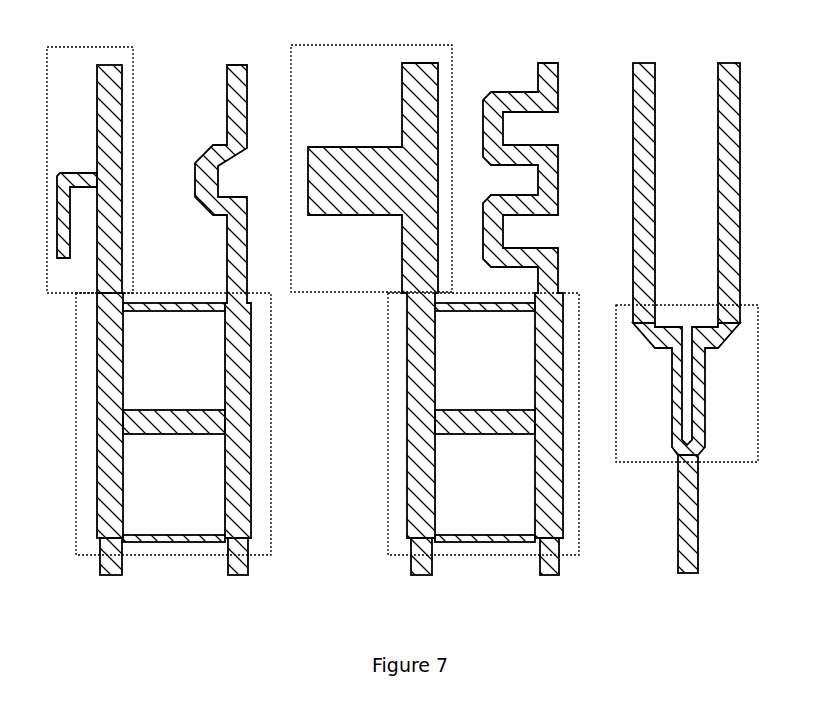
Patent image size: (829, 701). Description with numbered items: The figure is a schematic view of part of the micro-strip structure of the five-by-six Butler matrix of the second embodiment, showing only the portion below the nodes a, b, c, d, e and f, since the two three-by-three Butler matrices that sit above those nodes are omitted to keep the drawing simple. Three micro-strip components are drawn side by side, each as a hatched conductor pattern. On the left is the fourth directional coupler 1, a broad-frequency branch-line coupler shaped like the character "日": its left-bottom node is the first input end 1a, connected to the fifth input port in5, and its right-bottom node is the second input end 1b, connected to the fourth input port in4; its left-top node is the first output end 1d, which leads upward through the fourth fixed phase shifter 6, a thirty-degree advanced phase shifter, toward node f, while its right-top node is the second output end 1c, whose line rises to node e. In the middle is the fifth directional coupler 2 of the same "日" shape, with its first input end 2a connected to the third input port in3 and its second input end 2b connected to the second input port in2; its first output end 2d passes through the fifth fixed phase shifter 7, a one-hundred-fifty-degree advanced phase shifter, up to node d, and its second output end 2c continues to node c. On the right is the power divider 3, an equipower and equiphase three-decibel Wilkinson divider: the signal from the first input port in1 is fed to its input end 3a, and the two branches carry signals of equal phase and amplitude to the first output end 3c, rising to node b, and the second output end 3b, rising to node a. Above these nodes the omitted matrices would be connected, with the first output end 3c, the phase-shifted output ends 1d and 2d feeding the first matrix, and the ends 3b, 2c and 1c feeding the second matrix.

The fourth directional coupler 1 is at (76, 420).
The first input end of the fourth directional coupler 1a is at (141, 521).
The second input end of the fourth directional coupler 1b is at (209, 521).
The second output end of the fourth directional coupler 1c is at (208, 330).
The first output end of the fourth directional coupler 1d is at (141, 330).
The fifth directional coupler 2 is at (388, 397).
The first input end of the fifth directional coupler 2a is at (453, 521).
The second input end of the fifth directional coupler 2b is at (519, 521).
The second output end of the fifth directional coupler 2c is at (518, 330).
The first output end of the fifth directional coupler 2d is at (453, 330).
The power divider 3 is at (758, 387).
The input end of the power divider 3a is at (704, 514).
The second output end of the power divider 3b is at (771, 289).
The first output end of the power divider 3c is at (615, 289).
The fourth fixed phase shifter 6 is at (133, 83).
The fifth fixed phase shifter 7 is at (452, 62).
The node a is at (729, 172).
The node b is at (644, 172).
The node c is at (523, 279).
The node d is at (373, 279).
The node e is at (223, 279).
The node f is at (89, 157).
The first input port in1 is at (689, 598).
The second input port in2 is at (545, 575).
The third input port in3 is at (422, 575).
The fourth input port in4 is at (245, 575).
The fifth input port in5 is at (110, 575).